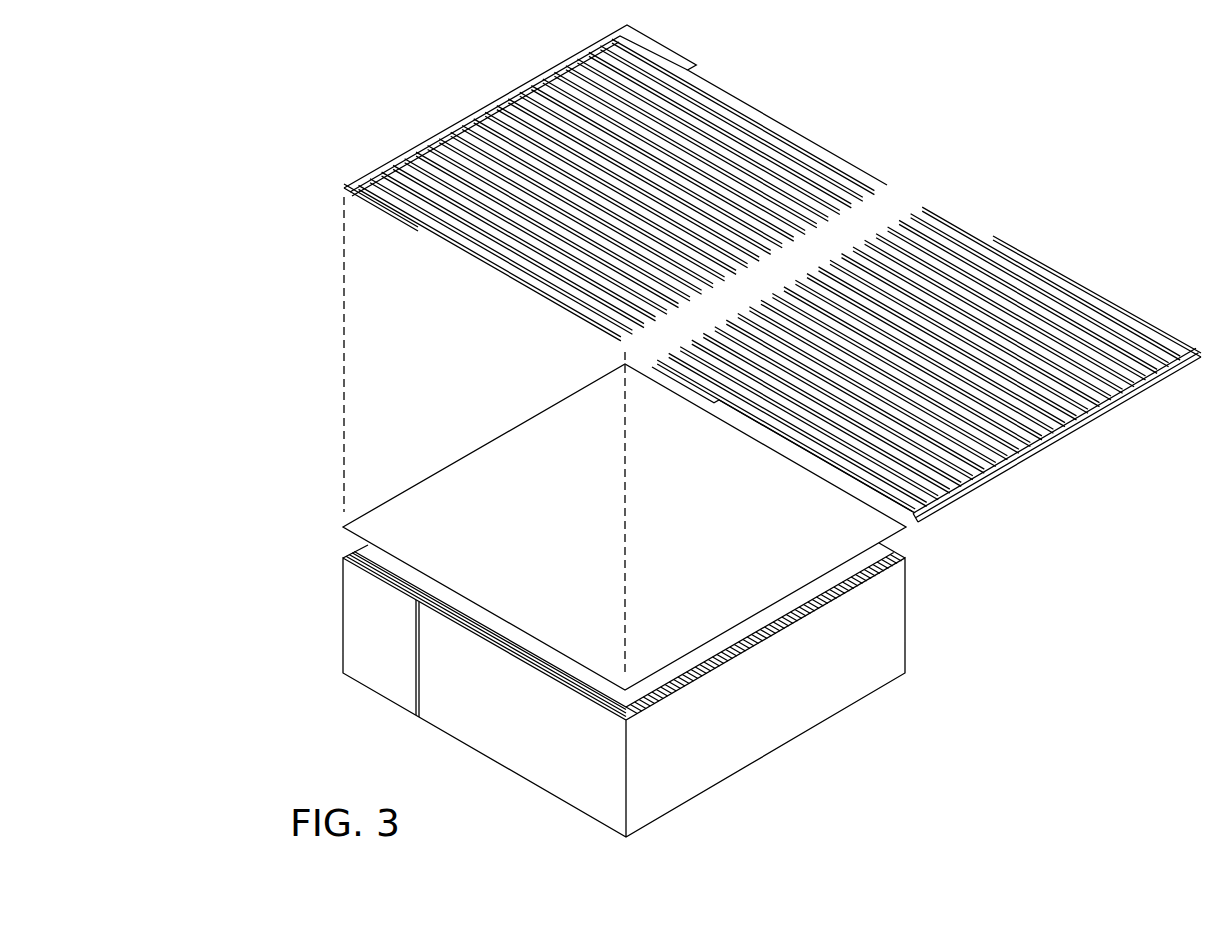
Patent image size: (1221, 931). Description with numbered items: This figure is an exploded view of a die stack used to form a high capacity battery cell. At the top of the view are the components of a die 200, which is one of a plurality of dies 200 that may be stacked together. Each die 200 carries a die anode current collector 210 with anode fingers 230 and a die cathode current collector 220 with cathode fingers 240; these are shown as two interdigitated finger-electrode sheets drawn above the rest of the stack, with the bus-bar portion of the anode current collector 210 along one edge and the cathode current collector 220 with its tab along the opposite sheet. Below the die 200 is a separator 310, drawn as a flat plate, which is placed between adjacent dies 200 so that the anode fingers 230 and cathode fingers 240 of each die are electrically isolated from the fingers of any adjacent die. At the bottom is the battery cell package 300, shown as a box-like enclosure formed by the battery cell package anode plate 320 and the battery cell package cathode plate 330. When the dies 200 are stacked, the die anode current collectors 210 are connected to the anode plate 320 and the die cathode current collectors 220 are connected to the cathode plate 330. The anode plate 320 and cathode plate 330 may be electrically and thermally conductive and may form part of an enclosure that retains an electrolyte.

The die 200 is at (925, 179).
The die anode current collector 210 is at (1075, 448).
The die cathode current collector 220 is at (437, 113).
The anode fingers 230 is at (960, 221).
The cathode fingers 240 is at (494, 277).
The housing assembly 300 is at (288, 361).
The separator 310 is at (475, 435).
The battery cell package anode plate 320 is at (809, 751).
The battery cell package cathode plate 330 is at (326, 622).